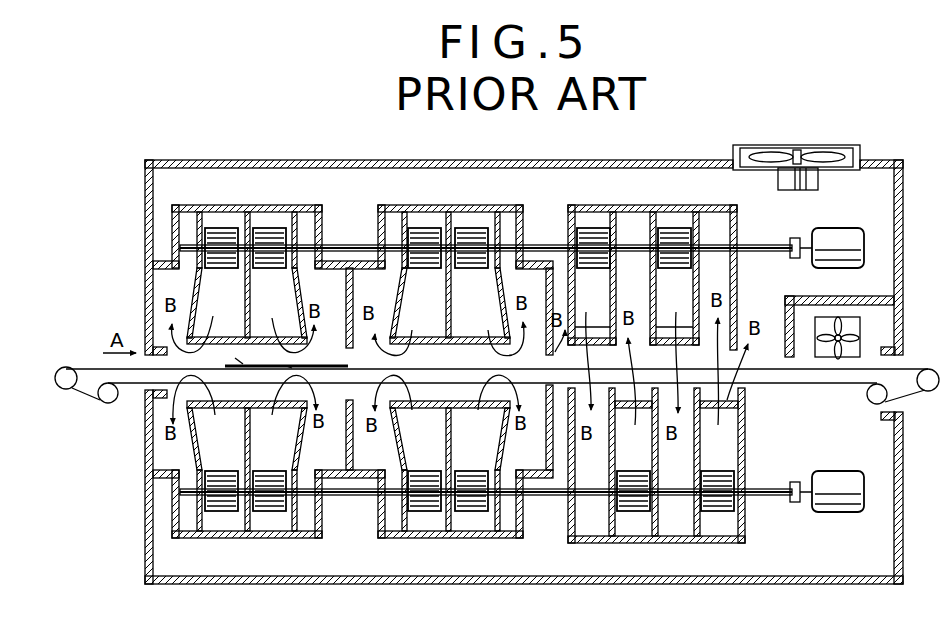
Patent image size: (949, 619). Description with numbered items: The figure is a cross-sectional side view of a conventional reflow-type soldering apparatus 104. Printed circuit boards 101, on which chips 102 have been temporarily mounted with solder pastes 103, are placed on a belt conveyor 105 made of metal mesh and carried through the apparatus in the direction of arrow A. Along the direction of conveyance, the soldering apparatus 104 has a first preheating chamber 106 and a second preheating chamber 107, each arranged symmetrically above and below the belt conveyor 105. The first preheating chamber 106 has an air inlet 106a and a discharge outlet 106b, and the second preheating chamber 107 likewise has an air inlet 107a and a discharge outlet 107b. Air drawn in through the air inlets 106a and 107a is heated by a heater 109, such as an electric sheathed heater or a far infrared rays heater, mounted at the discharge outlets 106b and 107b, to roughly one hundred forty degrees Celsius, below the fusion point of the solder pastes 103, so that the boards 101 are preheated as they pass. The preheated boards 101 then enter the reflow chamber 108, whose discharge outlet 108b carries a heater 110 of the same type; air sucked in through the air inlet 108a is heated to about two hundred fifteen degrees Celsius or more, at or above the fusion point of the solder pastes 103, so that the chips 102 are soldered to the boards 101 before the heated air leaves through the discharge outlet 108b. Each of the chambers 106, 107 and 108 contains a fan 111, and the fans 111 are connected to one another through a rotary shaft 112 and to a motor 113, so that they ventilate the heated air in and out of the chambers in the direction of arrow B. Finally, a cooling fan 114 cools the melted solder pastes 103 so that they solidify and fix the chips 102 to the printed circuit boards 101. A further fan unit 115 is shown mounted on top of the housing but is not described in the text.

The printed circuit board 101 is at (235, 358).
The chip 102 is at (286, 366).
The solder paste 103 is at (298, 359).
The soldering apparatus 104 is at (590, 148).
The belt conveyor 105 is at (113, 368).
The first preheating chamber 106 is at (262, 193).
The air inlet 106a is at (196, 230).
The discharge outlet 106b is at (245, 345).
The second preheating chamber 107 is at (460, 193).
The air inlet 107a is at (402, 225).
The discharge outlet 107b is at (443, 350).
The reflow chamber 108 is at (664, 193).
The air inlet 108a is at (617, 230).
The discharge outlet 108b is at (585, 345).
The heater 109 is at (276, 338).
The heater 110 is at (606, 332).
The fan 111 is at (221, 258).
The rotary shaft 112 is at (765, 246).
The motor 113 is at (836, 240).
The cooling fan 114 is at (852, 326).
The exhaust fan unit 115 is at (813, 154).